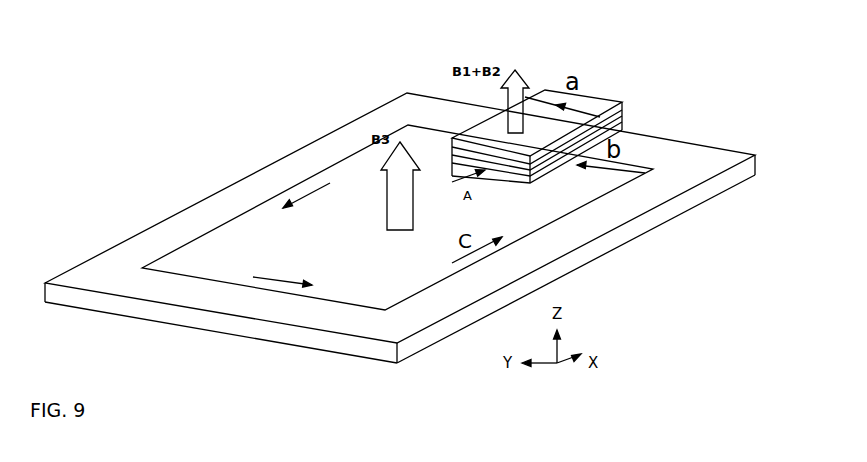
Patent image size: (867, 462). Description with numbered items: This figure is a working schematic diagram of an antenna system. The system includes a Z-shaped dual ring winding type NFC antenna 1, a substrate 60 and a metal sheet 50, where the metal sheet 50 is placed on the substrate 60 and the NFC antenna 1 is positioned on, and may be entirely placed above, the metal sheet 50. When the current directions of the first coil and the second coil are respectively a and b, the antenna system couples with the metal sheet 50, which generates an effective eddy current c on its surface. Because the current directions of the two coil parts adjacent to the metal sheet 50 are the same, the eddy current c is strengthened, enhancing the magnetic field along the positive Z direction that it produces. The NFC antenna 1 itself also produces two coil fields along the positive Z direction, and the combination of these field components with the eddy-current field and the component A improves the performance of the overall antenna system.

The Z-shaped dual ring winding type NFC antenna 1 is at (623, 112).
The metal sheet 50 is at (533, 213).
The substrate 60 is at (690, 170).